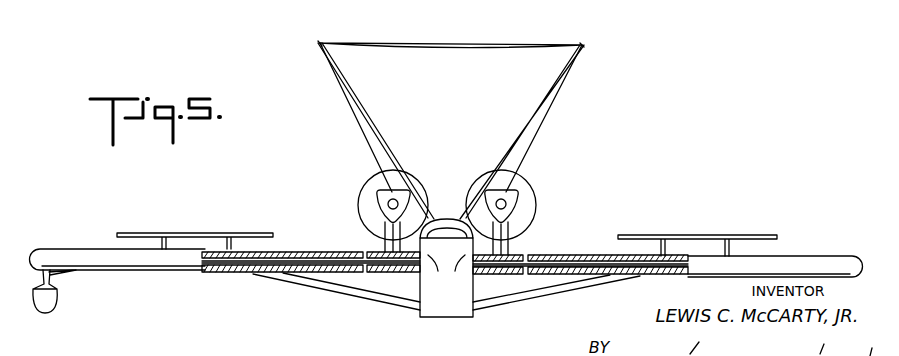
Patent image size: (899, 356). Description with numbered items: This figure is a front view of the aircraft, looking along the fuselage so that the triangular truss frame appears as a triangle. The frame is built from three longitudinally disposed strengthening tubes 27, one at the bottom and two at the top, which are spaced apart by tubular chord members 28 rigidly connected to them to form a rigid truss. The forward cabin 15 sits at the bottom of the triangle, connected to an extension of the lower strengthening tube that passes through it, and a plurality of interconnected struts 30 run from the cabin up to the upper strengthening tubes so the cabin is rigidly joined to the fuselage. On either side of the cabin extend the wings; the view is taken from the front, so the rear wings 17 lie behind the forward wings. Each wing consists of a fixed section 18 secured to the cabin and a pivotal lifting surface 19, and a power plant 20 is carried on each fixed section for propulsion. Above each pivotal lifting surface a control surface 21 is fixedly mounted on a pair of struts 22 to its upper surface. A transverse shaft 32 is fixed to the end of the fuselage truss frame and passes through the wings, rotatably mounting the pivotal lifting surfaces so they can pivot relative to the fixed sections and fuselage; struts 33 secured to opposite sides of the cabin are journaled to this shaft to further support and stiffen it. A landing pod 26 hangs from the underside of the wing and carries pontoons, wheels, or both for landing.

The forward cabin 15 is at (447, 283).
The rear wings 17 is at (296, 251).
The fixed section 18 is at (388, 273).
The pivotal lifting surface 19 is at (120, 270).
The power plant 20 is at (378, 201).
The control surface 21 is at (172, 236).
The struts 22 is at (170, 250).
The landing pod 26 is at (47, 310).
The strengthening tubes 27 is at (320, 43).
The chord members 28 is at (486, 46).
The struts 30 is at (382, 121).
The transverse shaft 32 is at (248, 266).
The struts 33 is at (328, 287).